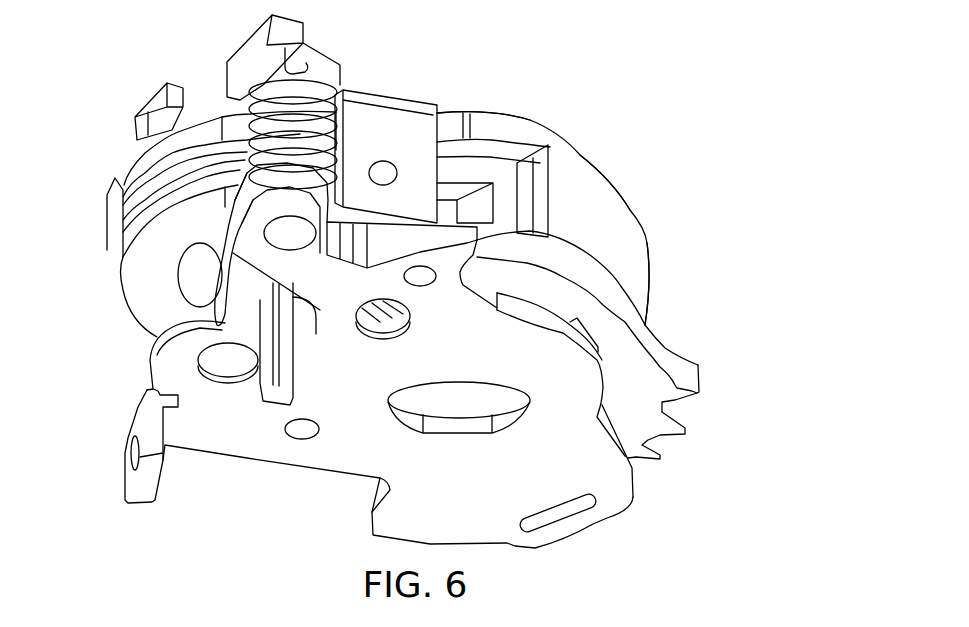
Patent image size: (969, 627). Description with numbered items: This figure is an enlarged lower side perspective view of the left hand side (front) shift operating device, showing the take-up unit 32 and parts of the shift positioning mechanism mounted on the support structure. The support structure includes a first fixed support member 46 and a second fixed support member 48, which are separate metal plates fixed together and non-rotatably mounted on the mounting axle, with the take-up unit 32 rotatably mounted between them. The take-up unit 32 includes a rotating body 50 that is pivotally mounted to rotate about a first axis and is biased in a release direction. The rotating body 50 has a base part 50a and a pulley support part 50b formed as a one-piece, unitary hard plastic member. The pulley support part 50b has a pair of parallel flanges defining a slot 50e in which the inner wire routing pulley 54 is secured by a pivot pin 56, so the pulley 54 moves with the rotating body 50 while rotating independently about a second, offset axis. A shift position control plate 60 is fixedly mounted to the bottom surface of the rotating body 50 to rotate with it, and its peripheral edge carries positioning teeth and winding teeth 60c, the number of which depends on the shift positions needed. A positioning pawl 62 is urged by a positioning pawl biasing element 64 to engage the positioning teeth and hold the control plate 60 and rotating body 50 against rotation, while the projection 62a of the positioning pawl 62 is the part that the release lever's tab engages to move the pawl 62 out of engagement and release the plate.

The take-up unit 32 is at (676, 142).
The first fixed support member 46 is at (533, 120).
The second fixed support member 48 is at (245, 462).
The rotating body 50 is at (640, 207).
The base part 50a is at (593, 207).
The pulley support part 50b is at (199, 118).
The slot 50e is at (449, 202).
The inner wire routing pulley 54 is at (150, 178).
The pivot pin 56 is at (195, 288).
The shift position control plate 60 is at (617, 279).
The winding teeth 60c is at (708, 380).
The positioning pawl 62 is at (208, 268).
The projection 62a is at (284, 368).
The positioning pawl biasing element 64 is at (303, 63).